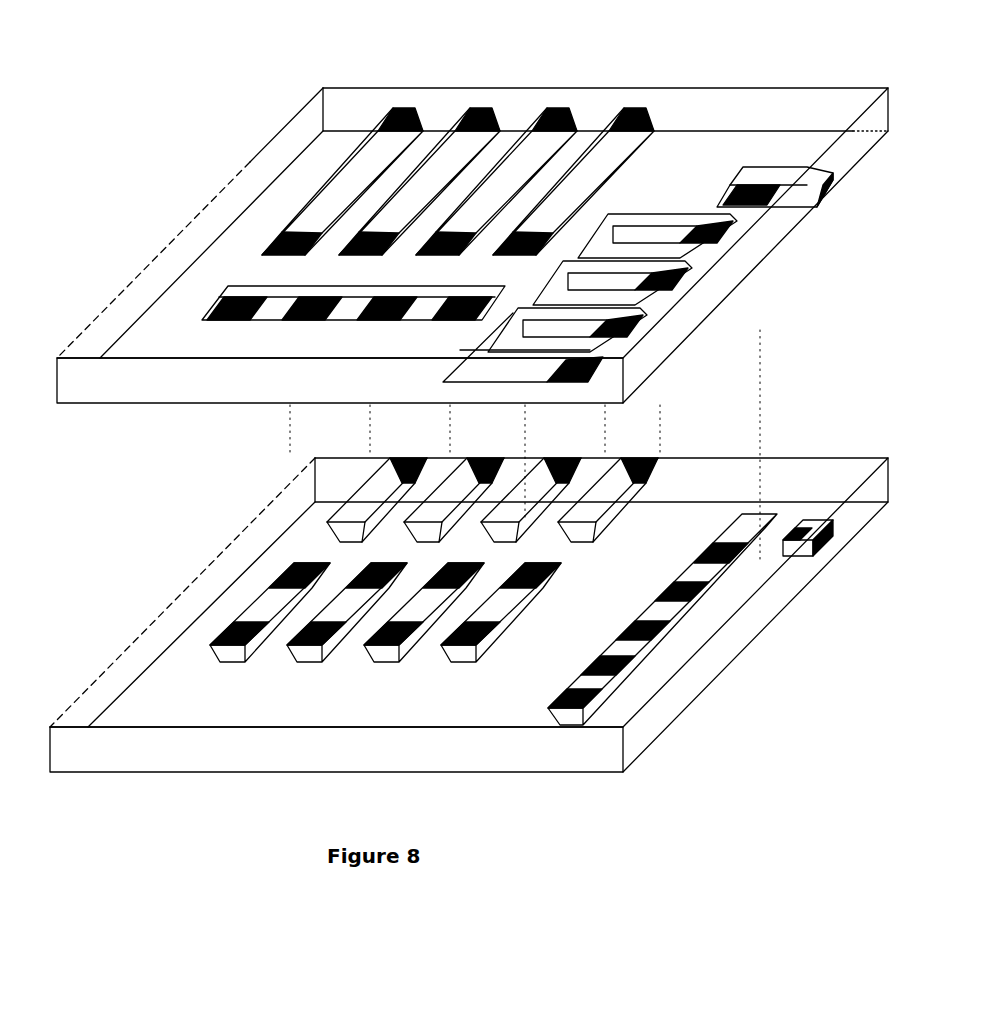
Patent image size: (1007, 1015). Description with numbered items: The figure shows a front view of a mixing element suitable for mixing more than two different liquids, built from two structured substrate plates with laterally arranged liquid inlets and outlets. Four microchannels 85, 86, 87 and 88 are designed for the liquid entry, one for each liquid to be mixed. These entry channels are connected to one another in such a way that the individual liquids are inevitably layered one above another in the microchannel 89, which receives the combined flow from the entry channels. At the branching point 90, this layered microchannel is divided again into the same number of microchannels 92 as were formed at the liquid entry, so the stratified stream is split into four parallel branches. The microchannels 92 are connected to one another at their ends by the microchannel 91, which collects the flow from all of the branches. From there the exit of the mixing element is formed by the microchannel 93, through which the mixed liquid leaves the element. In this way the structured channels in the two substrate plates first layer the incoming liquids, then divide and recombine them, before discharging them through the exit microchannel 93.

The microchannel 85 is at (390, 106).
The microchannel 86 is at (470, 106).
The microchannel 87 is at (553, 110).
The microchannel 88 is at (640, 110).
The microchannel 89 is at (233, 287).
The branching point 90 is at (683, 86).
The microchannel 91 is at (748, 567).
The microchannels 92 is at (603, 357).
The microchannel 93 is at (816, 556).